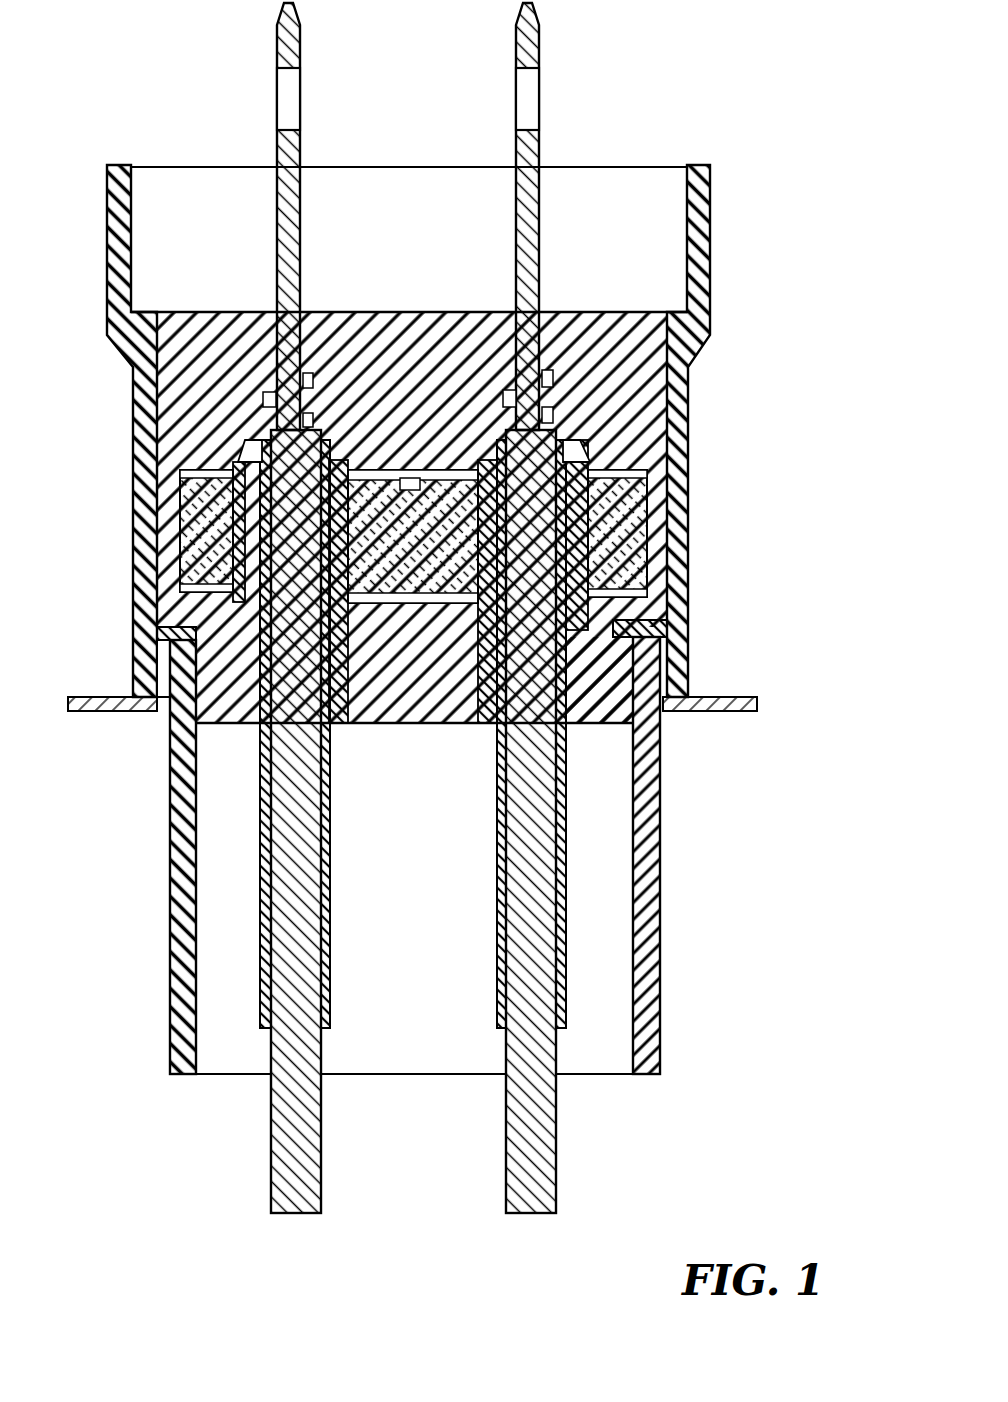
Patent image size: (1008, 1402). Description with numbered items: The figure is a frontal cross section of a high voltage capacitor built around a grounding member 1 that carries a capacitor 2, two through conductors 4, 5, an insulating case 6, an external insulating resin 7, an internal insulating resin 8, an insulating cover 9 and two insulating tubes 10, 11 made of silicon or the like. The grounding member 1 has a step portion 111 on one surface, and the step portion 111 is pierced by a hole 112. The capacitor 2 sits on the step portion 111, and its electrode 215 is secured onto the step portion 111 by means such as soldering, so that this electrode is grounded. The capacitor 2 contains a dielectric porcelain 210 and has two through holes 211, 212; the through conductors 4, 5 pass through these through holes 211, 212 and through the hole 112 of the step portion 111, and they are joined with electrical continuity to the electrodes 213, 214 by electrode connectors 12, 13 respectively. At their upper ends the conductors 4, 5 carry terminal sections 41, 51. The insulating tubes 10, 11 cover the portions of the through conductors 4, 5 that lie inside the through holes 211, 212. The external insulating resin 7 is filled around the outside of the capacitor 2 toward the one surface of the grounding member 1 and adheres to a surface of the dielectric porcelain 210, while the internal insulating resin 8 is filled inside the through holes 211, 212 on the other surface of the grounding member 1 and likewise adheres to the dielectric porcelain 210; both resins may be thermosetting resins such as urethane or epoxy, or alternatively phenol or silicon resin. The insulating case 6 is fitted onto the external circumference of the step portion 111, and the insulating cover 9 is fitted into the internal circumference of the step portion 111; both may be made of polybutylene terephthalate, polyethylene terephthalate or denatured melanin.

The grounding member 1 is at (733, 694).
The capacitor 2 is at (652, 510).
The through conductor 4 is at (306, 1164).
The through conductor 5 is at (542, 1164).
The insulating case 6 is at (713, 186).
The external insulating resin 7 is at (640, 349).
The internal insulating resin 8 is at (350, 682).
The insulating cover 9 is at (661, 920).
The insulating tube 10 is at (332, 916).
The insulating tube 11 is at (498, 841).
The electrode connector 12 is at (240, 465).
The electrode connector 13 is at (590, 428).
The terminal section 41 is at (278, 50).
The terminal section 51 is at (538, 46).
The step portion 111 is at (660, 628).
The hole 112 is at (588, 662).
The dielectric porcelain 210 is at (200, 536).
The through hole 211 is at (233, 661).
The through hole 212 is at (598, 578).
The electrode 213 is at (238, 458).
The electrode 214 is at (655, 450).
The electrode 215 is at (422, 606).